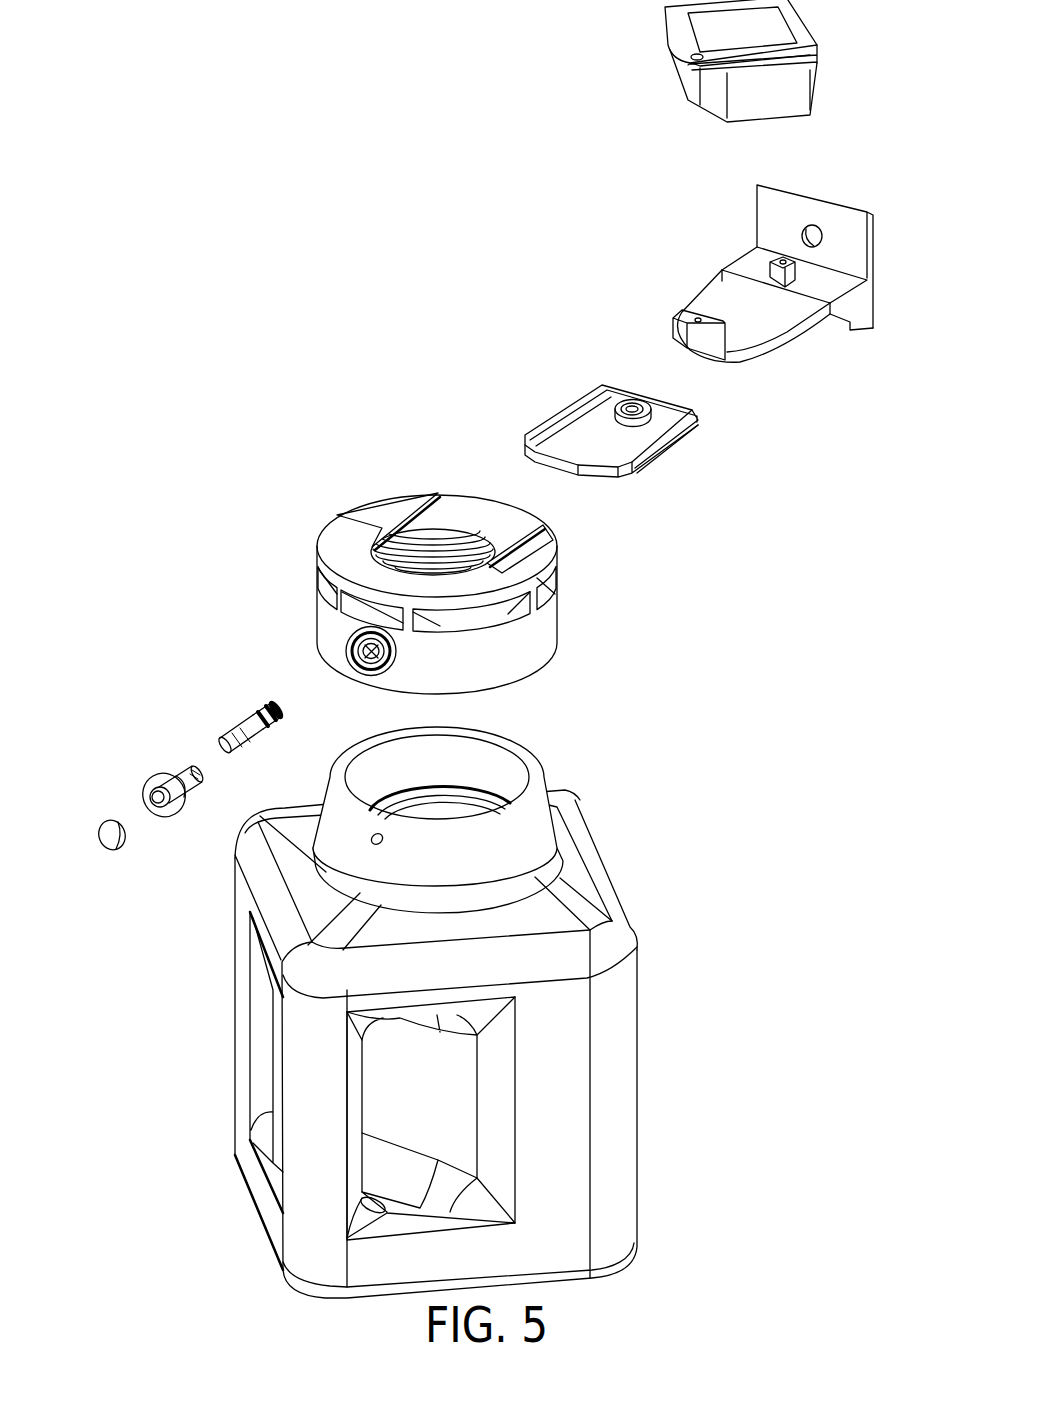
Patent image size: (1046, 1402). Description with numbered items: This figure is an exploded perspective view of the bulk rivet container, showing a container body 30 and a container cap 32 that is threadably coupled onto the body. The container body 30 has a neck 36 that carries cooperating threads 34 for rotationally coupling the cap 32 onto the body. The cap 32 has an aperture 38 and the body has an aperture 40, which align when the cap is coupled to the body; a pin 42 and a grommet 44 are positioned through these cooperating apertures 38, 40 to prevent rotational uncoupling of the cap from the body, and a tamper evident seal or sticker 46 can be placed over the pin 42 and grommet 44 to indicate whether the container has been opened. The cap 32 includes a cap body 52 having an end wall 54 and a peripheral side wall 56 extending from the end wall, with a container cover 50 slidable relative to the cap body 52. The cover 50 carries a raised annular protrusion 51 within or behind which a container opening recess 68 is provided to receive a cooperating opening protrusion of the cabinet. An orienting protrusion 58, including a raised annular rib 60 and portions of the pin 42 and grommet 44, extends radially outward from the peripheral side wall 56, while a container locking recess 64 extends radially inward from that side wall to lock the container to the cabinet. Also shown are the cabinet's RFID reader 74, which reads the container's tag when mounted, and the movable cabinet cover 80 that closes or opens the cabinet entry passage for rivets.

The container body 30 is at (438, 1012).
The container cap 32 is at (512, 589).
The cooperating threads 34 is at (453, 548).
The neck 36 is at (532, 817).
The aperture 38 is at (360, 660).
The aperture 40 is at (372, 842).
The pin 42 is at (242, 730).
The grommet 44 is at (170, 773).
The tamper evident seal or sticker 46 is at (87, 836).
The container cover 50 is at (613, 453).
The raised portion 51 is at (650, 400).
The cap body 52 is at (442, 589).
The end wall 54 is at (387, 507).
The peripheral side wall 56 is at (415, 589).
The orienting protrusion 58 is at (165, 759).
The raised annular protrusion or rib 60 is at (365, 645).
The container locking recess 64 is at (325, 590).
The container opening recess 68 is at (632, 406).
The RFID reader 74 is at (677, 65).
The cabinet cover 80 is at (767, 360).